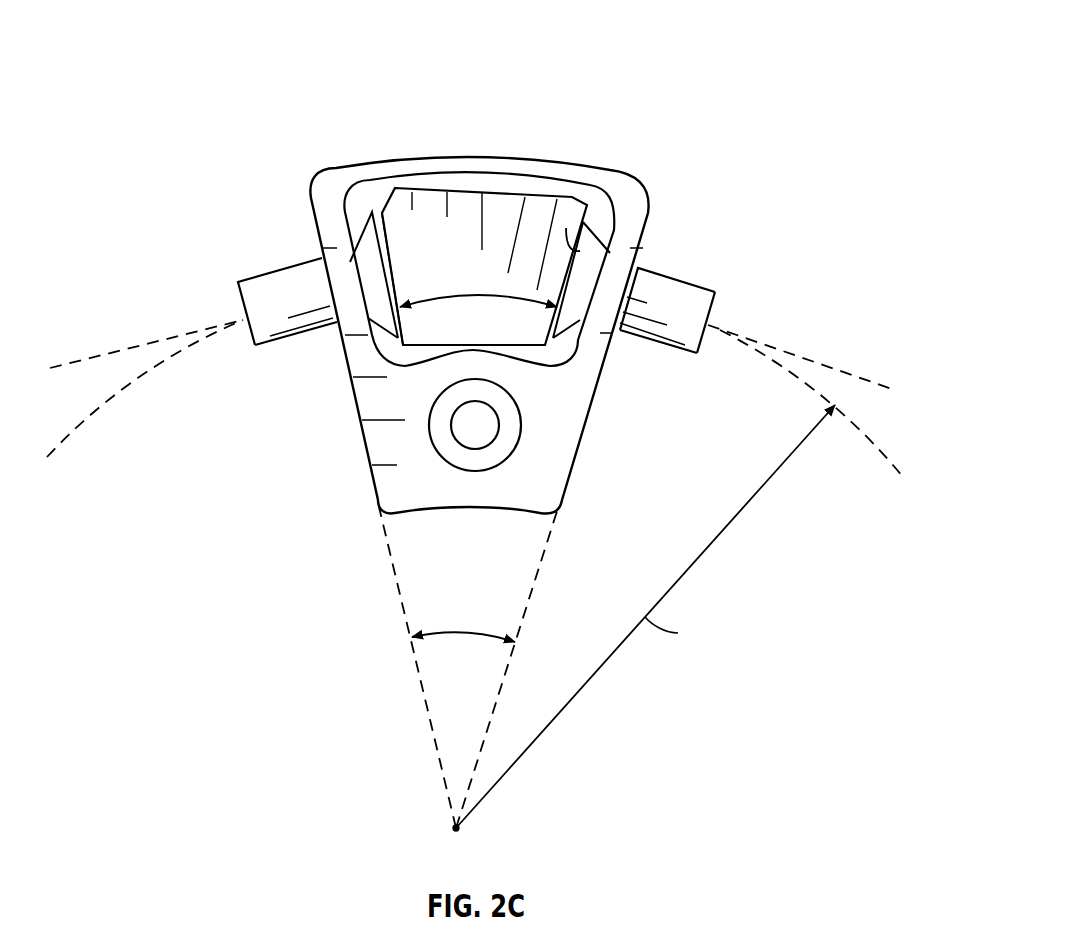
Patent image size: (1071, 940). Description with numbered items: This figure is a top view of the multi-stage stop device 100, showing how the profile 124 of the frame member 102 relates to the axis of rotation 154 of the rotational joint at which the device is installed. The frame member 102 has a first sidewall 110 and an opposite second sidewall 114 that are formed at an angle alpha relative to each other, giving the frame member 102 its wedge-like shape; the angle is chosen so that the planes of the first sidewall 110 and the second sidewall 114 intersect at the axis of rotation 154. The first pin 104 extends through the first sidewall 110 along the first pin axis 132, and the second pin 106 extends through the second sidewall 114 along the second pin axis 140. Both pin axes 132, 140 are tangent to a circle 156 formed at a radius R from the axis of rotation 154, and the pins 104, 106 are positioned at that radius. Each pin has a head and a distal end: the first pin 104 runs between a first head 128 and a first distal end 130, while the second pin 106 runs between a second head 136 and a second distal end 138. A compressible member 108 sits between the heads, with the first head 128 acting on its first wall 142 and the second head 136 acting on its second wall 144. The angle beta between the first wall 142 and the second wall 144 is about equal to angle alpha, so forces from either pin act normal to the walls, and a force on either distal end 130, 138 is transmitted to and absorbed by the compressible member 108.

The multi-stage stop device 100 is at (230, 58).
The frame member 102 is at (545, 168).
The first pin 104 is at (683, 293).
The second pin 106 is at (272, 280).
The compressible member 108 is at (497, 205).
The first sidewall 110 is at (578, 468).
The second sidewall 114 is at (355, 413).
The keyed-profile 124 is at (372, 485).
The first head 128 is at (367, 248).
The first distal end 130 is at (703, 357).
The first pin axis 132 is at (827, 362).
The second head 136 is at (598, 255).
The second distal end 138 is at (253, 348).
The second pin axis 140 is at (108, 353).
The first wall 142 is at (566, 228).
The second wall 144 is at (392, 252).
The axis of rotation 154 is at (458, 830).
The circle 156 is at (110, 402).